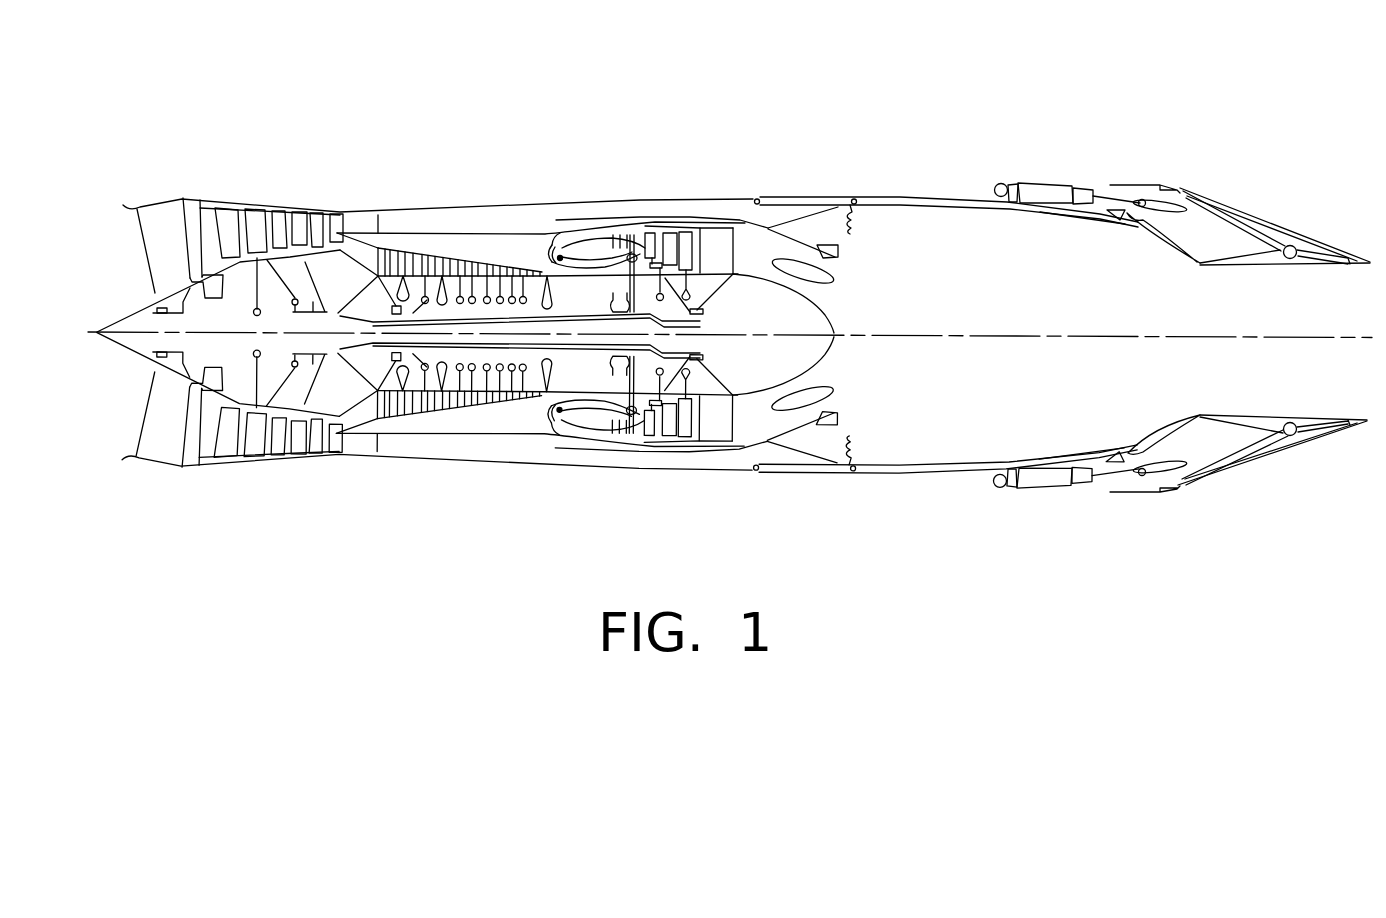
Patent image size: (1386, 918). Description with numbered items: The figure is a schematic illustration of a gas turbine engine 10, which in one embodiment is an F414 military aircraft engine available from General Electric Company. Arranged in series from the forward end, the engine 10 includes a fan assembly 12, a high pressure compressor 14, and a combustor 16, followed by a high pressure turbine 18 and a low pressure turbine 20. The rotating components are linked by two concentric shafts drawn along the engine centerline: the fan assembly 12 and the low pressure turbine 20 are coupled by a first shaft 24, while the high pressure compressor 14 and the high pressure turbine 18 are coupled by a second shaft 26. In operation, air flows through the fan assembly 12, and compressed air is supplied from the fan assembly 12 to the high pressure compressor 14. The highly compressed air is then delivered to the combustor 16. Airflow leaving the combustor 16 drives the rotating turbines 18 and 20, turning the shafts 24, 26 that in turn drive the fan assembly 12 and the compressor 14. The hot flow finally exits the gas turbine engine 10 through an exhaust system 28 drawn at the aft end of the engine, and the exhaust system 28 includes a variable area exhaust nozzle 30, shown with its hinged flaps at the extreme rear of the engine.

The gas turbine engine 10 is at (730, 271).
The fan assembly 12 is at (232, 196).
The high pressure compressor 14 is at (450, 263).
The combustor 16 is at (565, 235).
The high pressure turbine 18 is at (635, 226).
The low pressure turbine 20 is at (677, 225).
The first shaft 24 is at (561, 315).
The second shaft 26 is at (561, 348).
The exhaust system 28 is at (918, 245).
The variable area exhaust nozzle 30 is at (1158, 157).